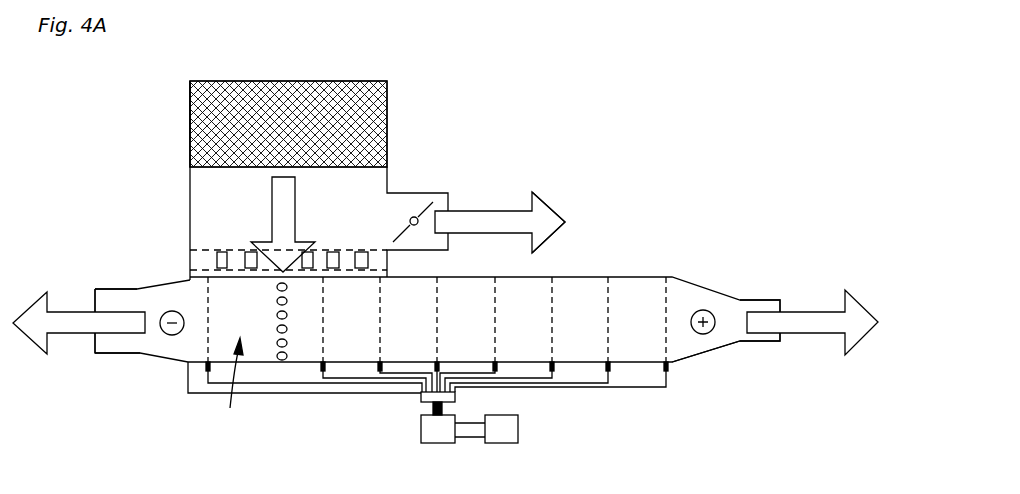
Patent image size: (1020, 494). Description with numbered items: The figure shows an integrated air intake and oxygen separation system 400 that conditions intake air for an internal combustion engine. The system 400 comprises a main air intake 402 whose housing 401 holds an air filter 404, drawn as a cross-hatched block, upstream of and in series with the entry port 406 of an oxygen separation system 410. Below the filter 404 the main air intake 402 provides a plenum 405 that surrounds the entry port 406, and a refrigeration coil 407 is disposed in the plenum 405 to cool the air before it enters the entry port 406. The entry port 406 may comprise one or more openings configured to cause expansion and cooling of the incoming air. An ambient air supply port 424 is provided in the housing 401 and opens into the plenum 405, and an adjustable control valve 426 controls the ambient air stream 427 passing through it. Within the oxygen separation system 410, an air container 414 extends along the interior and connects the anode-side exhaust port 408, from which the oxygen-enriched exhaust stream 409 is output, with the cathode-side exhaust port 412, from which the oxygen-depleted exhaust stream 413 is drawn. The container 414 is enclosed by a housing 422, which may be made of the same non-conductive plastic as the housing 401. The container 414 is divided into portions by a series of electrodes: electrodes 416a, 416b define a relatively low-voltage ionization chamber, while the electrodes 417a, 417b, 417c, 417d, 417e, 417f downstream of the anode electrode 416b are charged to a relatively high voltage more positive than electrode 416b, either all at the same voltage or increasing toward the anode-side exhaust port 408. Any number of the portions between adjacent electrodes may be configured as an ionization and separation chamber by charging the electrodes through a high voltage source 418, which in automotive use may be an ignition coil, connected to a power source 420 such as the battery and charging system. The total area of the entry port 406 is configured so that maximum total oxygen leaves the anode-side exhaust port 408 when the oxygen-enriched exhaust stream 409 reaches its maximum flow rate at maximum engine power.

The integrated air intake and oxygen separation system 400 is at (297, 50).
The housing 401 is at (387, 170).
The main air intake 402 is at (188, 140).
The air filter 404 is at (323, 90).
The plenum 405 is at (213, 208).
The entry port 406 is at (302, 278).
The refrigeration coil 407 is at (223, 248).
The anode-side exhaust port 408 is at (783, 303).
The oxygen-enriched exhaust stream 409 is at (800, 327).
The oxygen separation system 410 is at (632, 277).
The cathode-side exhaust port 412 is at (90, 345).
The oxygen-depleted exhaust stream 413 is at (63, 318).
The air container 414 is at (226, 385).
The electrode 416a is at (210, 340).
The electrode 416b is at (325, 346).
The electrode 417a is at (380, 347).
The electrode 417b is at (420, 290).
The electrode 417c is at (485, 350).
The electrode 417d is at (547, 350).
The electrode 417e is at (598, 347).
The electrode 417f is at (666, 300).
The high voltage source 418 is at (438, 437).
The power source 420 is at (512, 430).
The housing 422 is at (697, 356).
The ambient air supply port 424 is at (448, 202).
The adjustable control valve 426 is at (422, 200).
The ambient air stream 427 is at (540, 235).